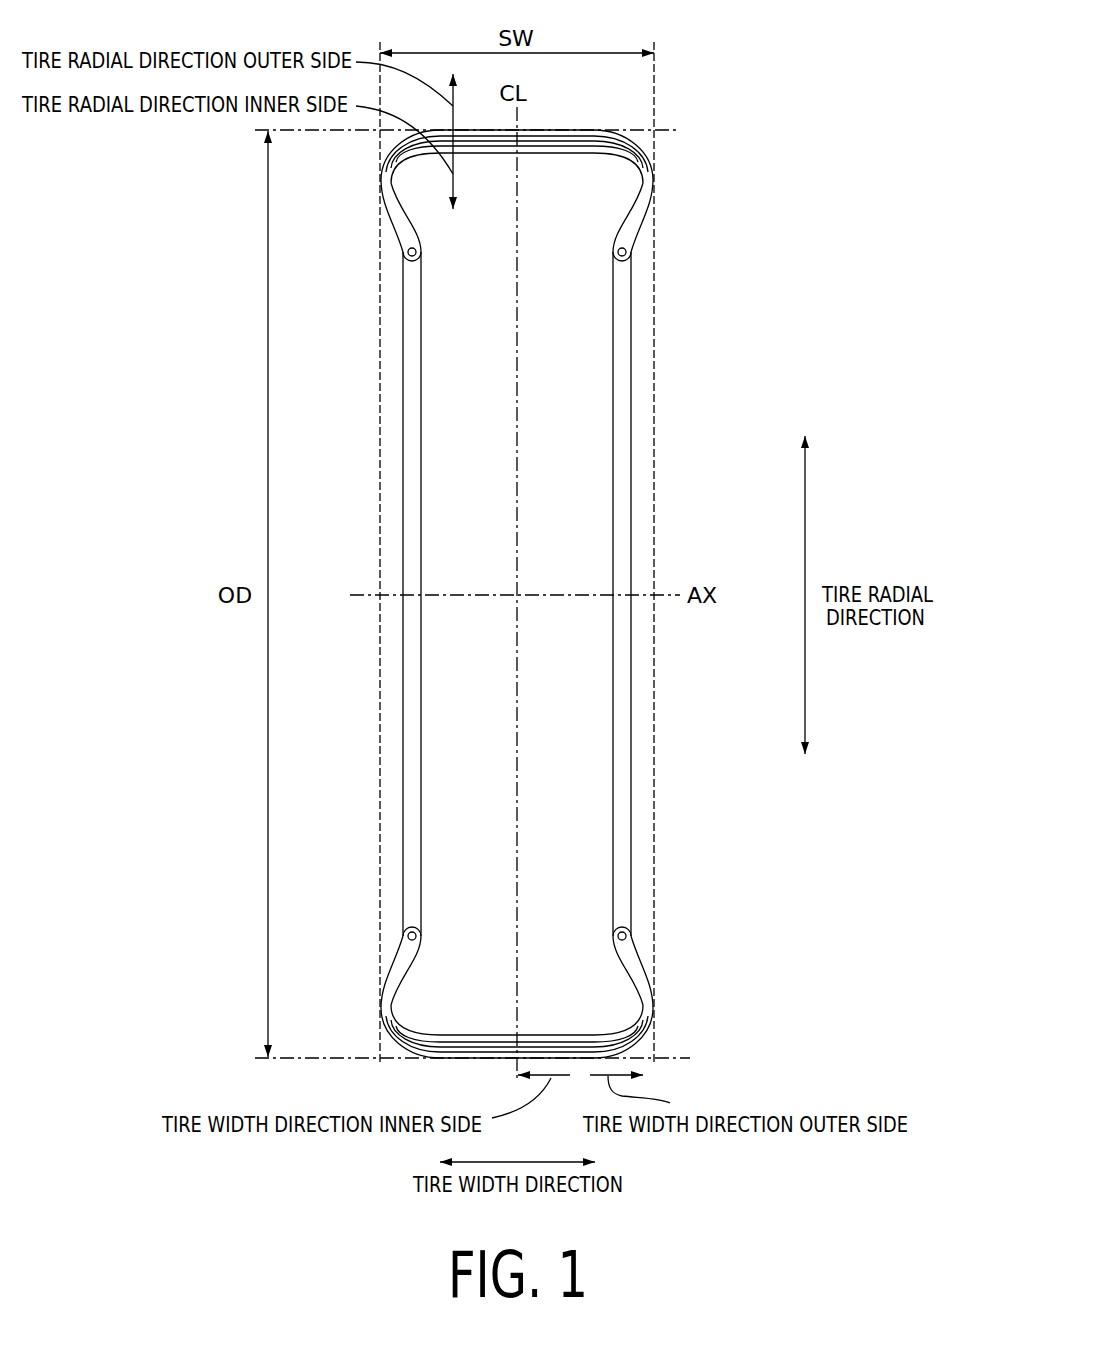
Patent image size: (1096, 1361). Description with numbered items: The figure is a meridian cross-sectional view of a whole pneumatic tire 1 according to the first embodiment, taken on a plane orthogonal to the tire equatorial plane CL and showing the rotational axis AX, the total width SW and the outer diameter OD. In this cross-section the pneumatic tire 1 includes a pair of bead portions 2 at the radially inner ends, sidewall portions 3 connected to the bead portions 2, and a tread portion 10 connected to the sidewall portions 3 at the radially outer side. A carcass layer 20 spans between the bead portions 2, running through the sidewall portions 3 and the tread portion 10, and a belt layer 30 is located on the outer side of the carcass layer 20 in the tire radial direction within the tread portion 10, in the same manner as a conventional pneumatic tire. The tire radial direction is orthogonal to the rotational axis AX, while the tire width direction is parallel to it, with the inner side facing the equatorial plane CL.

The pneumatic tire 1 is at (758, 150).
The bead portions 2 is at (399, 243).
The sidewall portions 3 is at (380, 185).
The tread portion 10 is at (540, 128).
The carcass layer 20 is at (655, 172).
The belt layer 30 is at (580, 140).